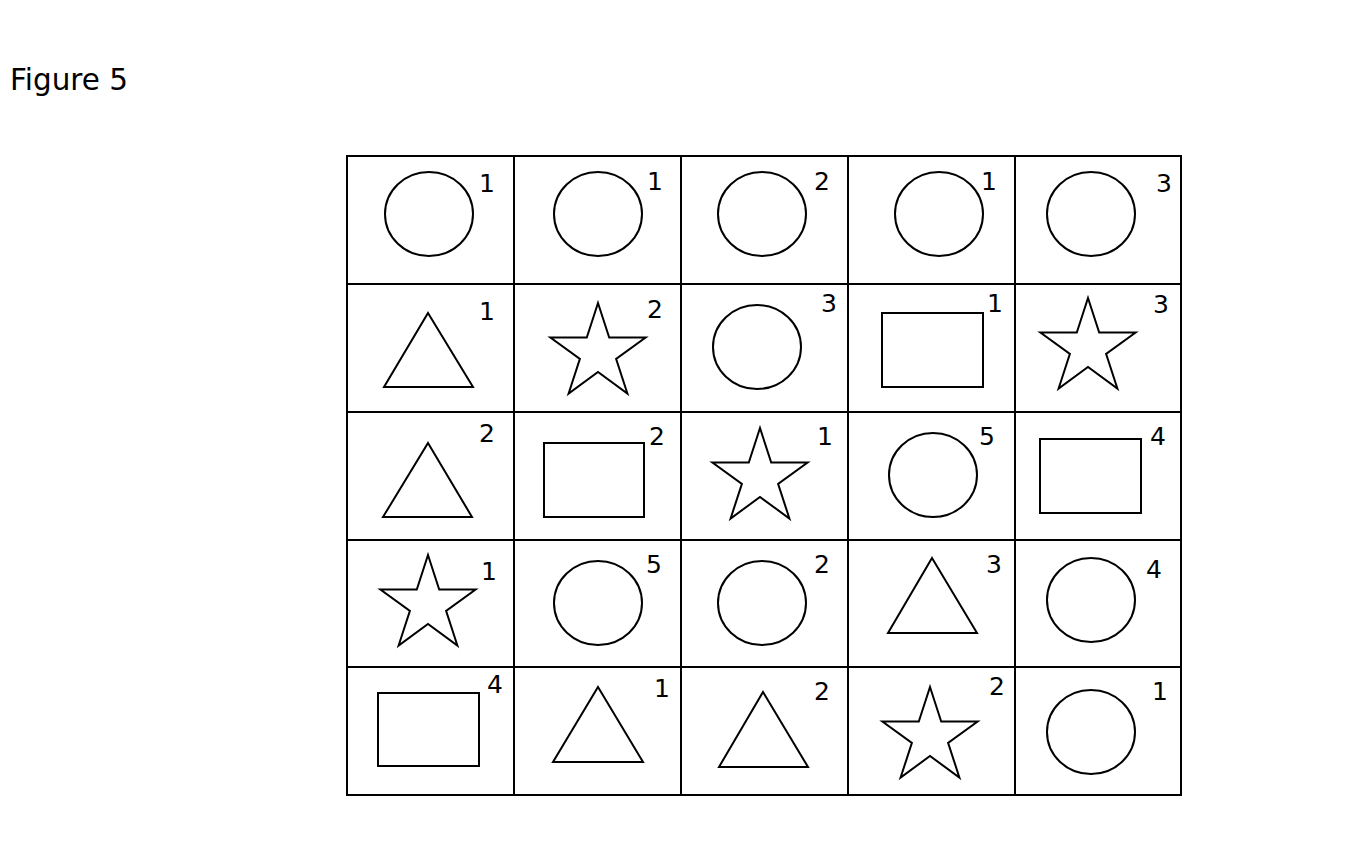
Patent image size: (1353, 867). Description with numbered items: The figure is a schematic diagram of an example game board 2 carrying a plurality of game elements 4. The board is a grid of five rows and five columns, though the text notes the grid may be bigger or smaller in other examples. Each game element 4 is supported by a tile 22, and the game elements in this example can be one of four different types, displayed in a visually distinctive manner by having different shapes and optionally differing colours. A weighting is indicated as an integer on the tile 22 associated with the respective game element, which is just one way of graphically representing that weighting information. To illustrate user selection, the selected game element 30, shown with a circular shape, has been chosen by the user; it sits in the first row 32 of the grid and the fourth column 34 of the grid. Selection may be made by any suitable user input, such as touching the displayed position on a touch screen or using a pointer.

The game board 2 is at (347, 335).
The tile 22 is at (360, 456).
The game elements 4 is at (399, 618).
The selected game element 30 is at (937, 172).
The first row 32 is at (1195, 209).
The fourth column 34 is at (882, 140).